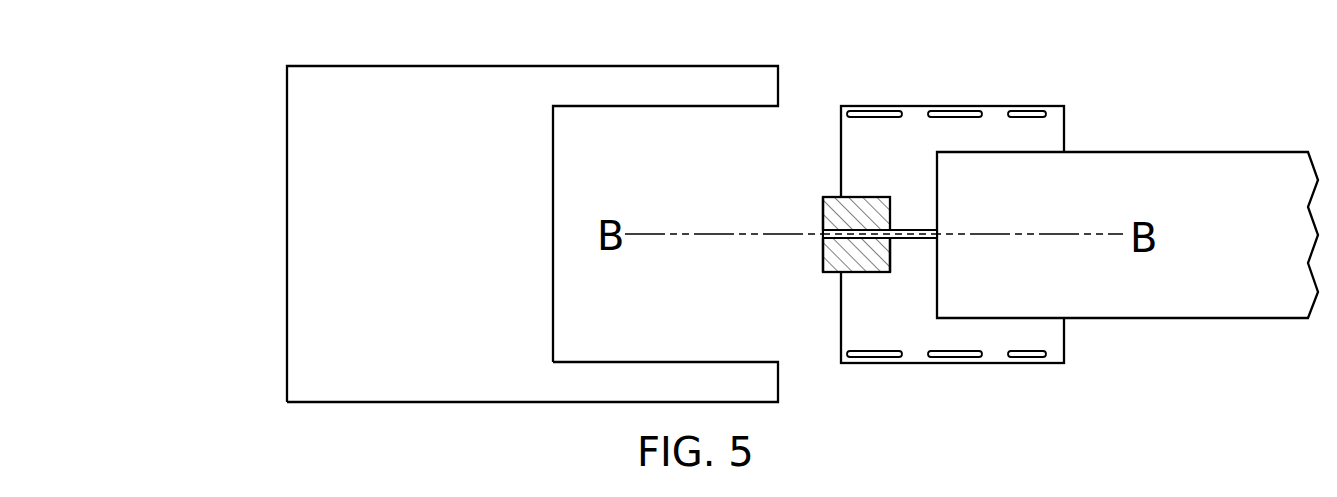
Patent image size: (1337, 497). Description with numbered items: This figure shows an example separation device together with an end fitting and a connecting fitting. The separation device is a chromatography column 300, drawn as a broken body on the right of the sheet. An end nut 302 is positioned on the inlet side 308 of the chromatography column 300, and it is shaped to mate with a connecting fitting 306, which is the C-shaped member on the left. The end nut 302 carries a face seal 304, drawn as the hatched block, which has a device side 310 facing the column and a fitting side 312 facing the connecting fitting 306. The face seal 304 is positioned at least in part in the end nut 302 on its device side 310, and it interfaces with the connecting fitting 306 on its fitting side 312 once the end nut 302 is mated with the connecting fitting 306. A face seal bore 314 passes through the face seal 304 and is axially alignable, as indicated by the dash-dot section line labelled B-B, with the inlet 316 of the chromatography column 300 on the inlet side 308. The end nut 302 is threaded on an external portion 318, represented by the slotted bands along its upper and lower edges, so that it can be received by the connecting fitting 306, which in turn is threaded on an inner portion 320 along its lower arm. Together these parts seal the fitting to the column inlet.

The chromatography column 300 is at (1120, 152).
The end nut 302 is at (882, 128).
The face seal 304 is at (863, 197).
The connecting fitting 306 is at (533, 66).
The inlet side 308 is at (933, 250).
The device side 310 is at (892, 255).
The fitting side 312 is at (823, 213).
The face seal bore 314 is at (823, 237).
The inlet 316 is at (938, 230).
The external portion 318 is at (951, 106).
The inner portion 320 is at (665, 362).